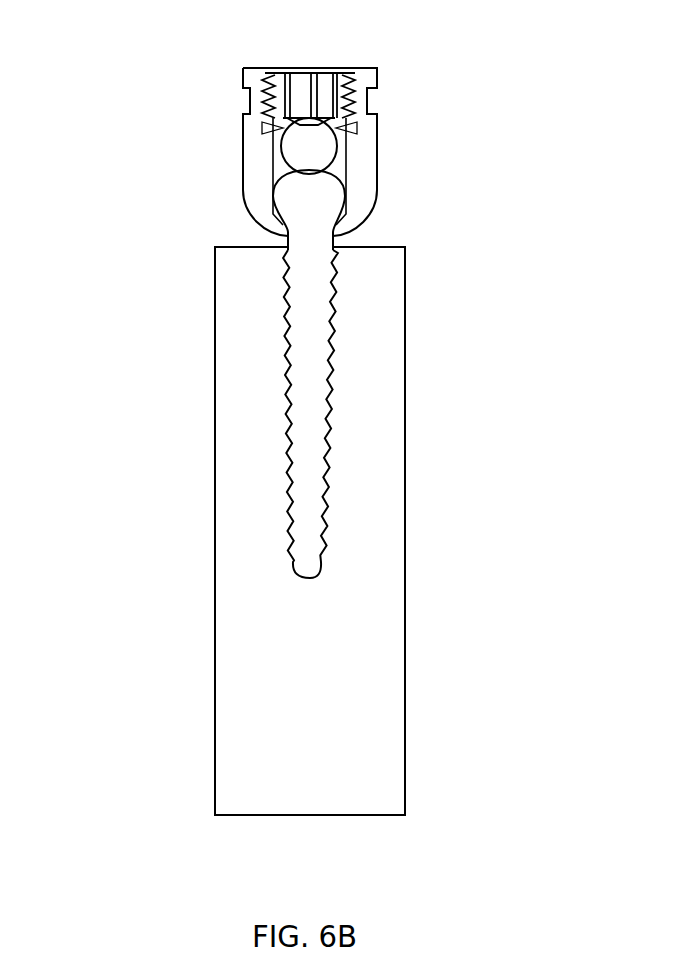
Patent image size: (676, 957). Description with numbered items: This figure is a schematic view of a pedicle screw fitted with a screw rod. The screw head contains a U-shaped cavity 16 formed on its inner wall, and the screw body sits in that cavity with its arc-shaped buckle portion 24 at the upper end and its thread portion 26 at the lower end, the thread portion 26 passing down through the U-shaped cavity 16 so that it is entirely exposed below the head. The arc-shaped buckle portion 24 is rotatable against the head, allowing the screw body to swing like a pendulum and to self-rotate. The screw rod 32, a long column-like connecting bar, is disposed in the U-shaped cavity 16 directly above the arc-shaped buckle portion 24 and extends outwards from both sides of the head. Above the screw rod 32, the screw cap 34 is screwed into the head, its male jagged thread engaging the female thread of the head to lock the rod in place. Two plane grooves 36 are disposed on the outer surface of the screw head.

The U-shaped cavity 16 is at (280, 125).
The arc-shaped buckle portion 24 is at (283, 202).
The thread portion 26 is at (287, 442).
The screw rod 32 is at (320, 158).
The screw cap 34 is at (303, 73).
The plane grooves 36 is at (250, 100).